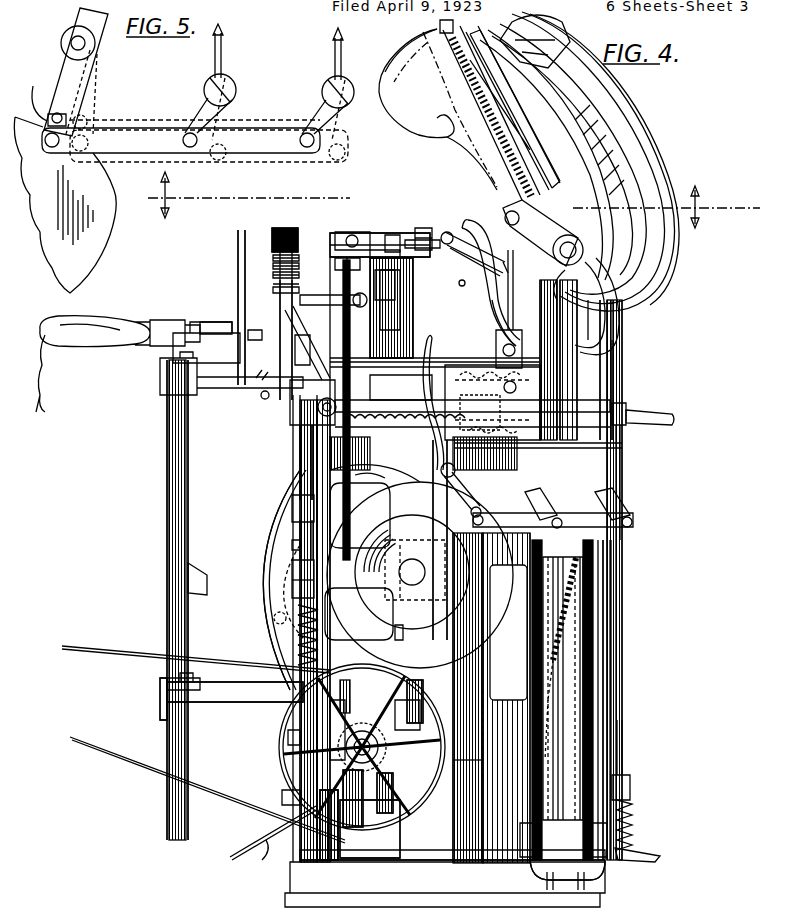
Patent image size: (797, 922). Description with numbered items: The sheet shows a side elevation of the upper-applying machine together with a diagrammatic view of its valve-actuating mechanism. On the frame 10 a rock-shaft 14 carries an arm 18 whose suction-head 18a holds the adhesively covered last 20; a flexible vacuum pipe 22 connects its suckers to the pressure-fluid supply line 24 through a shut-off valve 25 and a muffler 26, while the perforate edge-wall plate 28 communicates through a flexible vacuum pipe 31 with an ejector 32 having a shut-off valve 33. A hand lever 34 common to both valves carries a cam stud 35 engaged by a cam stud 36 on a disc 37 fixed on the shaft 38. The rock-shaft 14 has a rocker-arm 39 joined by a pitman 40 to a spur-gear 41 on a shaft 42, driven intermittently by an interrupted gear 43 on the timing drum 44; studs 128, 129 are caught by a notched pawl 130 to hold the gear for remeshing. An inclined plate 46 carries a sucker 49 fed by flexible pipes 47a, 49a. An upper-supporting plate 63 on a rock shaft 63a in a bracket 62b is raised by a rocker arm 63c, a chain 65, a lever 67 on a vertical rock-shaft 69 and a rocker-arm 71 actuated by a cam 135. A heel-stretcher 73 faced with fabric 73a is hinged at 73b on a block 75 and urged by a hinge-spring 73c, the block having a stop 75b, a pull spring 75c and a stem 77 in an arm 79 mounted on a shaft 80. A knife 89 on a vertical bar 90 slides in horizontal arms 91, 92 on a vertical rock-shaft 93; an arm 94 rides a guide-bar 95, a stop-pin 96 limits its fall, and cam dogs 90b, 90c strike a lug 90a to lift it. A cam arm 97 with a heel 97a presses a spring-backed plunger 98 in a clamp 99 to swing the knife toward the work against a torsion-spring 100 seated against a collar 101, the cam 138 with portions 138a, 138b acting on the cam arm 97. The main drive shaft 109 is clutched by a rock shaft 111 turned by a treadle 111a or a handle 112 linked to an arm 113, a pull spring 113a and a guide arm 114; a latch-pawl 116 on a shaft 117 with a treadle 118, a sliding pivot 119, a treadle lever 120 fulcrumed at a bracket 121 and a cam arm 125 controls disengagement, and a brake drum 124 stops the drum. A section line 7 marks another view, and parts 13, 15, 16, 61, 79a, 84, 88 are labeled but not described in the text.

In FIG. 5, the section line 7 is at (249, 191).
In FIG. 4, the section line 7 is at (666, 200).
In FIG. 4, the frame 10 is at (483, 760).
In FIG. 4, the slide bar 13 is at (439, 402).
In FIG. 4, the rock-shaft 14 is at (584, 251).
In FIG. 4, the hose 15 is at (612, 333).
In FIG. 4, the guide 16 is at (395, 330).
In FIG. 4, the arm 18 is at (590, 146).
In FIG. 4, the suction-head 18a is at (500, 112).
In FIG. 4, the last 20 is at (408, 140).
In FIG. 4, the flexible vacuum pipe 22 is at (640, 168).
In FIG. 4, the pressure-fluid supply line 24 is at (565, 890).
In FIG. 5, the shut-off valve 25 is at (233, 82).
In FIG. 4, the shut-off valve 25 is at (555, 494).
In FIG. 4, the muffler 26 is at (563, 688).
In FIG. 4, the perforate edge-wall plate 28 is at (462, 90).
In FIG. 4, the flexible vacuum pipe 31 is at (552, 46).
In FIG. 4, the ejector 32 is at (625, 410).
In FIG. 5, the shut-off valve 33 is at (328, 82).
In FIG. 4, the shut-off valve 33 is at (622, 488).
In FIG. 5, the hand lever 34 is at (78, 23).
In FIG. 4, the hand lever 34 is at (401, 387).
In FIG. 5, the cam stud 35 is at (68, 121).
In FIG. 4, the cam stud 35 is at (472, 508).
In FIG. 5, the cam stud 36 is at (33, 94).
In FIG. 4, the cam stud 36 is at (395, 632).
In FIG. 5, the disc 37 is at (105, 194).
In FIG. 4, the disc 37 is at (380, 522).
In FIG. 4, the shaft 38 is at (408, 572).
In FIG. 4, the rocker-arm 39 is at (534, 228).
In FIG. 4, the pitman 40 is at (508, 297).
In FIG. 4, the spur-gear 41 is at (516, 330).
In FIG. 4, the shaft 42 is at (614, 360).
In FIG. 4, the interrupted gear 43 is at (610, 588).
In FIG. 4, the timing drum 44 is at (292, 470).
In FIG. 4, the inclined plate 46 is at (474, 262).
In FIG. 4, the flexible pipe 47a is at (468, 320).
In FIG. 4, the sucker 49 is at (456, 240).
In FIG. 4, the flexible pipe 49a is at (459, 283).
In FIG. 4, the hook arm 61 is at (450, 244).
In FIG. 4, the bracket 62b is at (340, 260).
In FIG. 4, the upper-supporting plate 63 is at (375, 236).
In FIG. 4, the rock shaft 63a is at (385, 230).
In FIG. 4, the rocker arm 63c is at (428, 230).
In FIG. 4, the chain 65 is at (436, 226).
In FIG. 4, the lever 67 is at (393, 236).
In FIG. 4, the vertical rock-shaft 69 is at (352, 232).
In FIG. 4, the rocker-arm 71 is at (380, 474).
In FIG. 4, the heel-stretcher 73 is at (292, 244).
In FIG. 4, the fabric facing 73a is at (280, 232).
In FIG. 4, the hinge 73b is at (272, 266).
In FIG. 4, the hinge-spring 73c is at (272, 258).
In FIG. 4, the block 75 is at (279, 282).
In FIG. 4, the stop 75b is at (250, 334).
In FIG. 4, the pull spring 75c is at (262, 398).
In FIG. 4, the stem 77 is at (296, 326).
In FIG. 4, the arm 79 is at (303, 345).
In FIG. 4, the pivot block 79a is at (300, 395).
In FIG. 4, the shaft 80 is at (318, 410).
In FIG. 4, the ring 84 is at (276, 290).
In FIG. 4, the block 88 is at (380, 290).
In FIG. 4, the knife 89 is at (212, 322).
In FIG. 4, the vertical bar 90 is at (168, 455).
In FIG. 4, the lug 90a is at (196, 584).
In FIG. 4, the cam dog 90b is at (273, 618).
In FIG. 4, the cam dog 90c is at (480, 716).
In FIG. 4, the horizontal arm 91 is at (256, 380).
In FIG. 4, the horizontal arm 92 is at (231, 704).
In FIG. 4, the vertical rock-shaft 93 is at (300, 440).
In FIG. 4, the arm 94 is at (206, 343).
In FIG. 4, the vertical guide-bar 95 is at (274, 274).
In FIG. 4, the stop-pin 96 is at (193, 685).
In FIG. 4, the cam arm 97 is at (292, 578).
In FIG. 4, the heel 97a is at (364, 548).
In FIG. 4, the spring-backed plunger 98 is at (290, 544).
In FIG. 4, the clamp 99 is at (295, 503).
In FIG. 4, the torsion-spring 100 is at (296, 630).
In FIG. 4, the collar 101 is at (292, 588).
In FIG. 4, the main drive shaft 109 is at (348, 756).
In FIG. 4, the rock shaft 111 is at (575, 783).
In FIG. 4, the treadle 111a is at (290, 796).
In FIG. 4, the handle 112 is at (674, 413).
In FIG. 4, the arm 113 is at (630, 803).
In FIG. 4, the pull spring 113a is at (630, 822).
In FIG. 4, the guide arm 114 is at (630, 303).
In FIG. 4, the latch-pawl 116 is at (300, 812).
In FIG. 4, the shaft 117 is at (330, 832).
In FIG. 4, the treadle 118 is at (262, 862).
In FIG. 4, the sliding pivot 119 is at (376, 828).
In FIG. 4, the treadle lever 120 is at (630, 847).
In FIG. 4, the bracket 121 is at (445, 348).
In FIG. 4, the brake drum 124 is at (358, 751).
In FIG. 4, the cam arm 125 is at (290, 738).
In FIG. 4, the stud 128 is at (519, 381).
In FIG. 4, the stud 129 is at (487, 412).
In FIG. 4, the notched pawl 130 is at (622, 447).
In FIG. 4, the cam 135 is at (371, 469).
In FIG. 4, the cam 138 is at (520, 636).
In FIG. 4, the cam portion 138a is at (622, 564).
In FIG. 4, the cam portion 138b is at (560, 645).